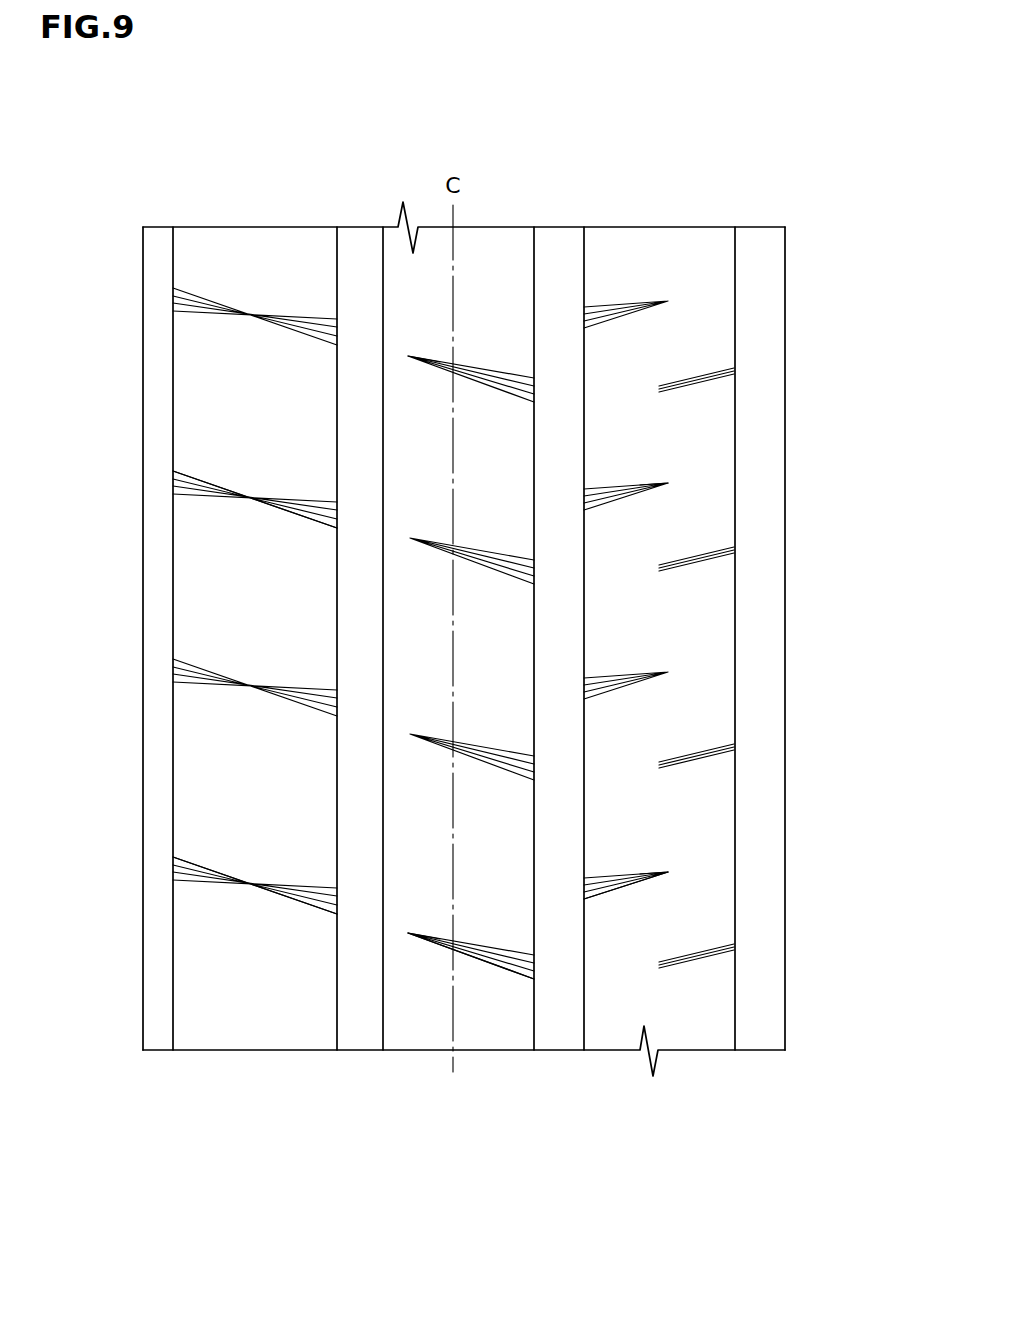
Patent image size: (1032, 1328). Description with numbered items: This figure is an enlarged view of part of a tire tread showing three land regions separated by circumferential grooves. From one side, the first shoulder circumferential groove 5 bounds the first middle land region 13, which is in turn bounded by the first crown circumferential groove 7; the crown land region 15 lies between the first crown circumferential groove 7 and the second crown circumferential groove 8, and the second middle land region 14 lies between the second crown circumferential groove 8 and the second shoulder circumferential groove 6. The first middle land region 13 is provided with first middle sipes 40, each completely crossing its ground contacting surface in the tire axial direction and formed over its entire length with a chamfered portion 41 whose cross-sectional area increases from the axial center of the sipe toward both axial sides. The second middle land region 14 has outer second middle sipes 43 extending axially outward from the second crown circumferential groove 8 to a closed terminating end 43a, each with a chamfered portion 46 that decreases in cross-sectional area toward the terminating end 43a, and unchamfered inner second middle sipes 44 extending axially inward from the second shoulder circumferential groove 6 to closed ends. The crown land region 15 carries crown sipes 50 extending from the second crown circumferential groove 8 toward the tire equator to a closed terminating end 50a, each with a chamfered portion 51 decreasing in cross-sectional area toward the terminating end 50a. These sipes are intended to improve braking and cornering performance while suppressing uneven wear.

The first shoulder circumferential groove 5 is at (152, 248).
The first middle land region 13 is at (254, 248).
The first crown circumferential groove 7 is at (356, 258).
The crown land region 15 is at (480, 252).
The second crown circumferential groove 8 is at (550, 251).
The second middle land region 14 is at (632, 246).
The second shoulder circumferential groove 6 is at (758, 247).
The first middle sipe 40 is at (242, 318).
The chamfered portion 41 is at (290, 515).
The crown sipe 50 is at (495, 372).
The terminating end 50a is at (408, 356).
The chamfered portion 51 is at (517, 982).
The outer second middle sipe 43 is at (630, 488).
The terminating end 43a is at (668, 483).
The inner second middle sipe 44 is at (694, 378).
The chamfered portion 46 is at (598, 906).